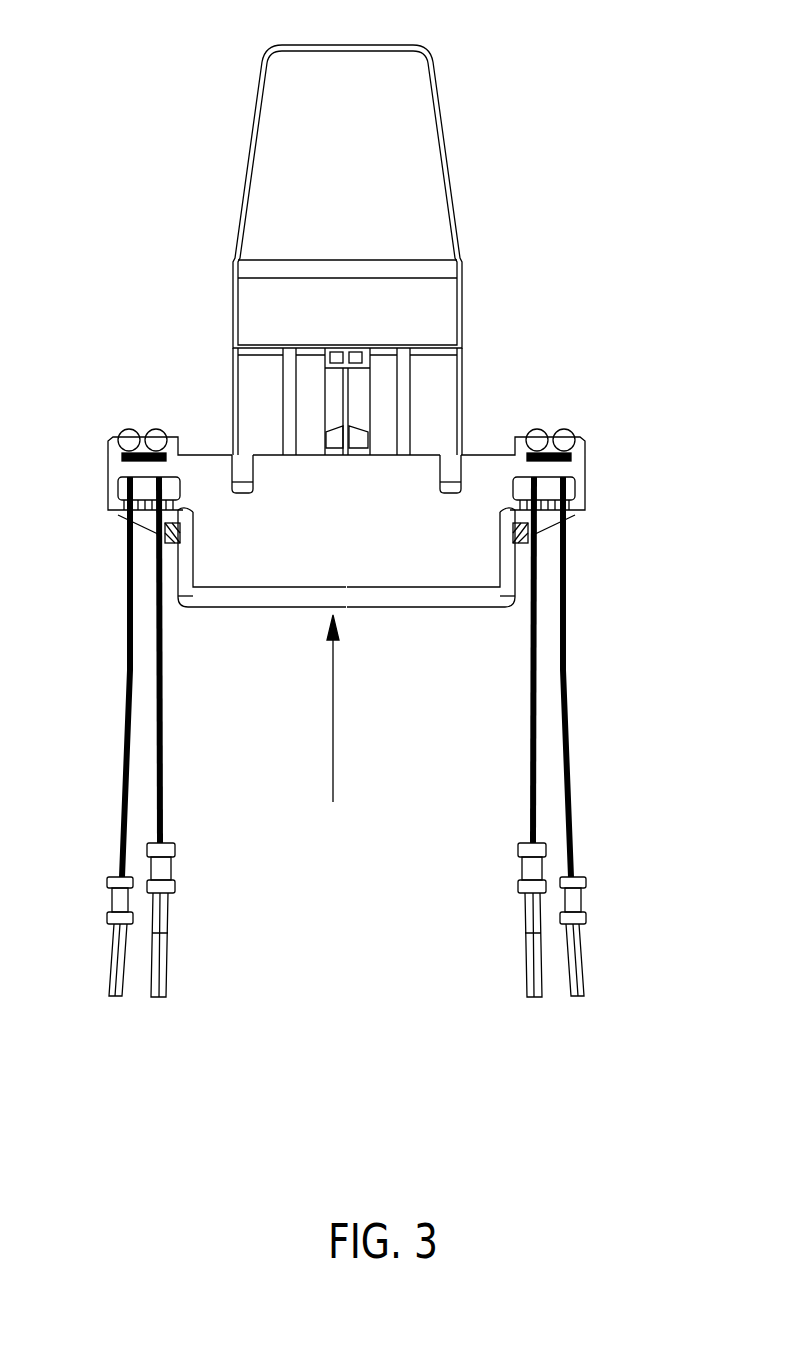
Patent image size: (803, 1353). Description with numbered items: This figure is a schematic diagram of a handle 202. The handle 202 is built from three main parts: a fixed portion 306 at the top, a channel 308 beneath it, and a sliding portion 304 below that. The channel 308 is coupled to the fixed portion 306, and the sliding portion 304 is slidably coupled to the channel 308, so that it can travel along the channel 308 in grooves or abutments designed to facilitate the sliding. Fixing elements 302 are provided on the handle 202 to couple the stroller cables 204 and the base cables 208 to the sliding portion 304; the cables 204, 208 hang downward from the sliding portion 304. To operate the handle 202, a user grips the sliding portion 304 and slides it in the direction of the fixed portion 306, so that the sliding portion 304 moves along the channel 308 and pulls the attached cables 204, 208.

The handle 202 is at (586, 1082).
The stroller cables 204 is at (125, 690).
The base cables 208 is at (162, 740).
The fixing elements 302 is at (157, 438).
The sliding portion 304 is at (338, 527).
The fixed portion 306 is at (335, 206).
The channel 308 is at (355, 398).